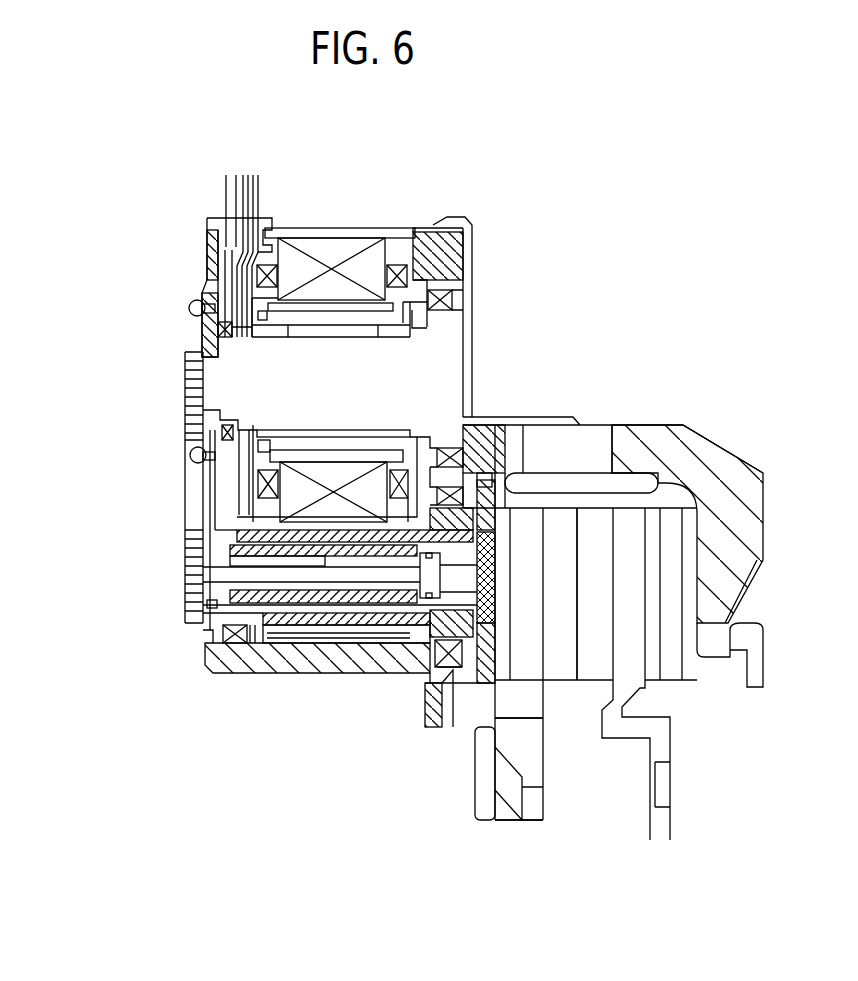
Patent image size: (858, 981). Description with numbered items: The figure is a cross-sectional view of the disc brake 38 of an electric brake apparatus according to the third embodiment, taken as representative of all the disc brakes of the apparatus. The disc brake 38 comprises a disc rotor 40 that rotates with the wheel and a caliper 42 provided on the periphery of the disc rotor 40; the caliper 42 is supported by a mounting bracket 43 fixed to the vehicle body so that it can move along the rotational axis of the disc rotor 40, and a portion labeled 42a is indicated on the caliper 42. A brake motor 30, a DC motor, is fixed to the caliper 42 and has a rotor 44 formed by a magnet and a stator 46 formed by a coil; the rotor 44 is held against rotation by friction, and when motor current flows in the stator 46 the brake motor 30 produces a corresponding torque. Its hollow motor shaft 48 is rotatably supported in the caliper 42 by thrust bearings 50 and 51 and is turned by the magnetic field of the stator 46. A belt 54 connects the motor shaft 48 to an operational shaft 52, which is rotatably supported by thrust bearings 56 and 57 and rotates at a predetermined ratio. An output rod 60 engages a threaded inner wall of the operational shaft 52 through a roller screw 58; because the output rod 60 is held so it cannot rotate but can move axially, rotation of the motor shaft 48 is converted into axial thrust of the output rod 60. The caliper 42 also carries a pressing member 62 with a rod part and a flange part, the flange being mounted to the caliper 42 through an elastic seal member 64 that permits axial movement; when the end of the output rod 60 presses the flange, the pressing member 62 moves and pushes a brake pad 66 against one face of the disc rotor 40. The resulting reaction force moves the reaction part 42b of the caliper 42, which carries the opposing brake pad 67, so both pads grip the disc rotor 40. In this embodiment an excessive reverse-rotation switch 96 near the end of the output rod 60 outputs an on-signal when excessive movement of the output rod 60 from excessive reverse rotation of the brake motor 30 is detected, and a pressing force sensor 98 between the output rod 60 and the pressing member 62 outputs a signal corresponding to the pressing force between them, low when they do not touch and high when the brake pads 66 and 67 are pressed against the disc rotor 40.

The brake motor 30 is at (200, 258).
The disc brake 38 is at (546, 838).
The disc rotor 40 is at (646, 690).
The caliper 42 is at (604, 424).
The housing top plate 42a is at (512, 428).
The reaction part 42b is at (700, 428).
The mounting bracket 43 is at (760, 628).
The rotor 44 is at (400, 326).
The stator 46 is at (333, 252).
The motor shaft 48 is at (184, 367).
The thrust bearing 50 is at (445, 292).
The thrust bearing 51 is at (212, 412).
The operational shaft 52 is at (188, 583).
The belt 54 is at (183, 477).
The thrust bearing 56 is at (206, 648).
The thrust bearing 57 is at (453, 680).
The roller screw 58 is at (356, 612).
The output rod 60 is at (323, 597).
The pressing member 62 is at (545, 618).
The seal member 64 is at (479, 433).
The brake pad 66 is at (538, 618).
The brake pad 67 is at (668, 548).
The excessive reverse-rotation switch 96 is at (188, 605).
The pressing force sensor 98 is at (414, 645).